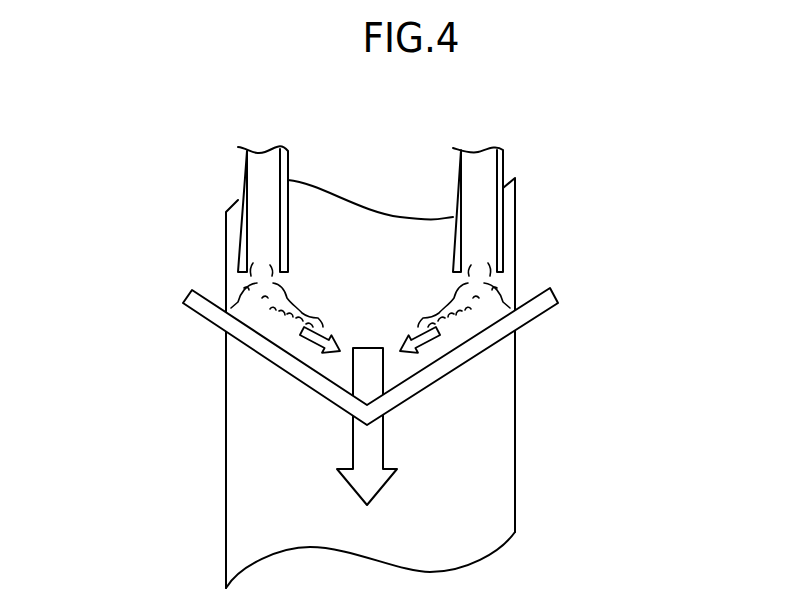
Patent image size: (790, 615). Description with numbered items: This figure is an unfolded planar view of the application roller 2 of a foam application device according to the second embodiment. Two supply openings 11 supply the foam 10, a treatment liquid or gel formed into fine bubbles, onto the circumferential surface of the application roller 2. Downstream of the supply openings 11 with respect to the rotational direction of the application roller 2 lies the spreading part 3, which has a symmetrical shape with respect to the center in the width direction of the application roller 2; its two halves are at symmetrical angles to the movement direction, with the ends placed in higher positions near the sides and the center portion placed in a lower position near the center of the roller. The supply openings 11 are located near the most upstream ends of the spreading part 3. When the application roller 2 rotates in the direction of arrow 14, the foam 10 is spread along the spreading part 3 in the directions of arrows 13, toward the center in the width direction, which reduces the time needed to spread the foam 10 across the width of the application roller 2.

The application roller 2 is at (237, 442).
The spreading part 3 is at (493, 335).
The foam 10 is at (232, 304).
The supply opening 11 is at (243, 260).
The arrows indicating spreading directions of the foam 13 is at (322, 333).
The arrow indicating rotational direction of the application roller 14 is at (372, 443).